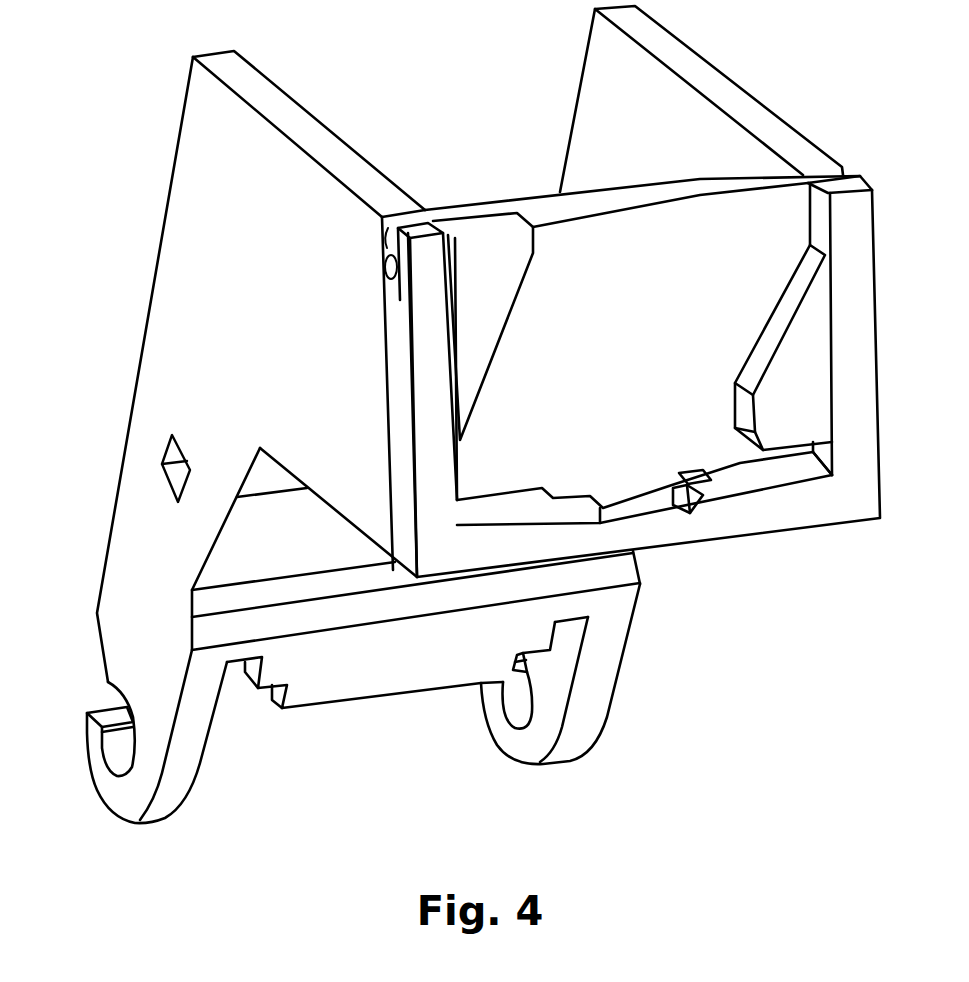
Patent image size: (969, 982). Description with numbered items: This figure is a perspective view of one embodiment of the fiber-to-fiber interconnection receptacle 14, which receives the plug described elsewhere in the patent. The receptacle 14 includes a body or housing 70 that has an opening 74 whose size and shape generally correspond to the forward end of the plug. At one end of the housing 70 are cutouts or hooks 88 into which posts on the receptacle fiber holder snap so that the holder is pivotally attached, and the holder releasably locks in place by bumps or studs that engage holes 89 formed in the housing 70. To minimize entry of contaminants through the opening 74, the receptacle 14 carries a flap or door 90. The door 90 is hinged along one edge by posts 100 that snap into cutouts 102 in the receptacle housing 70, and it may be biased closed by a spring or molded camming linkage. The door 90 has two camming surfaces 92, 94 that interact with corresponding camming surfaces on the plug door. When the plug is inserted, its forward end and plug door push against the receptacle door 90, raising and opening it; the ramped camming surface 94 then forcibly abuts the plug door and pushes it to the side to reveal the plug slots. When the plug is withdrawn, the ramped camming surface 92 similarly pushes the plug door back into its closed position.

The receptacle 14 is at (108, 130).
The housing 70 is at (243, 353).
The opening 74 is at (815, 456).
The hooks 88 is at (118, 750).
The holes 89 is at (177, 475).
The door 90 is at (667, 288).
The camming surface 92 is at (498, 350).
The camming surface 94 is at (768, 338).
The posts 100 is at (386, 264).
The cutouts 102 is at (388, 234).